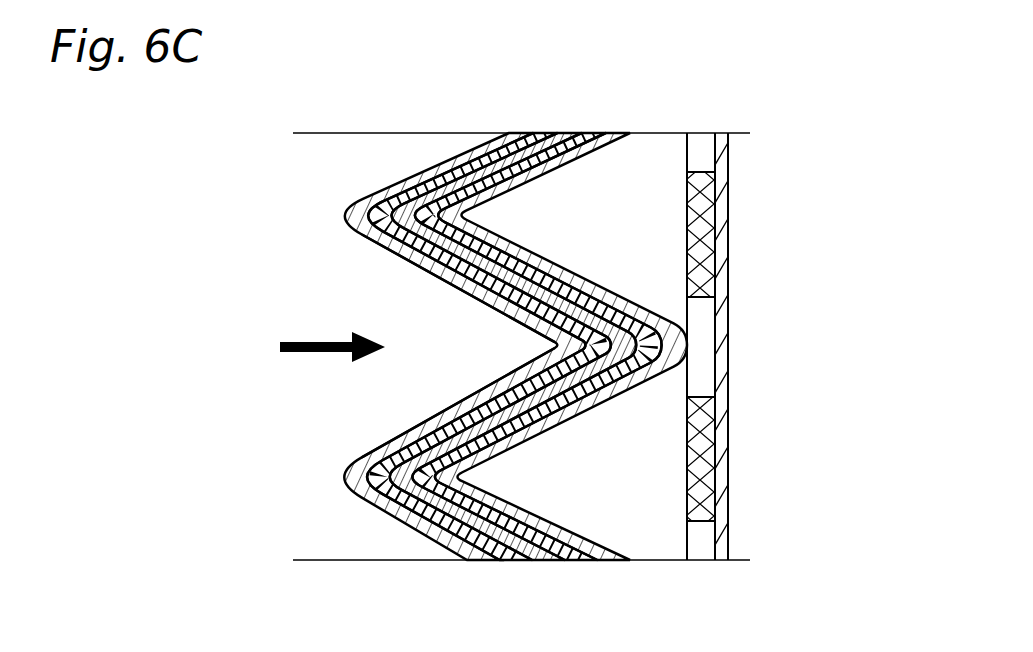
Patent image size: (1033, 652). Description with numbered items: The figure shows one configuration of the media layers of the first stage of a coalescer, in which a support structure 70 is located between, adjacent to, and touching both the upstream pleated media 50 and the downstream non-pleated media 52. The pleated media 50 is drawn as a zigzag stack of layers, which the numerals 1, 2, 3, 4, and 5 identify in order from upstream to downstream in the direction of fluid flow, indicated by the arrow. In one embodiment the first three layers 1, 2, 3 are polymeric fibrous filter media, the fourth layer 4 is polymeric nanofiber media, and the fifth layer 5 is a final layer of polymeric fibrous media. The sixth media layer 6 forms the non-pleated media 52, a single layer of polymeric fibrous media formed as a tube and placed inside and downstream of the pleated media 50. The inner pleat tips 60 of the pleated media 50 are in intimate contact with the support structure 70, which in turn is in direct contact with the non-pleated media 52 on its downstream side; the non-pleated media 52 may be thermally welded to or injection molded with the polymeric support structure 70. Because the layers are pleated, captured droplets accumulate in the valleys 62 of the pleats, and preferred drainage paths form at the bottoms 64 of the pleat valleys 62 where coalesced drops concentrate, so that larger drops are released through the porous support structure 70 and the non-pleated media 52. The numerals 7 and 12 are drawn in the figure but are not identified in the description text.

The first media layer 1 is at (485, 558).
The second media layer 2 is at (525, 566).
The third media layer 3 is at (542, 560).
The nanofiber media layer 4 is at (573, 562).
The final pleated media layer 5 is at (610, 558).
The non-pleated media layer 6 is at (722, 556).
The spacer block 7 is at (698, 512).
The filter assembly 12 is at (710, 66).
The pleated media 50 is at (648, 122).
The non-pleated media 52 is at (728, 200).
The inner pleat tips 60 is at (688, 355).
The pleat valleys 62 is at (390, 305).
The bottoms of pleat valleys 64 is at (465, 383).
The support structure 70 is at (688, 156).